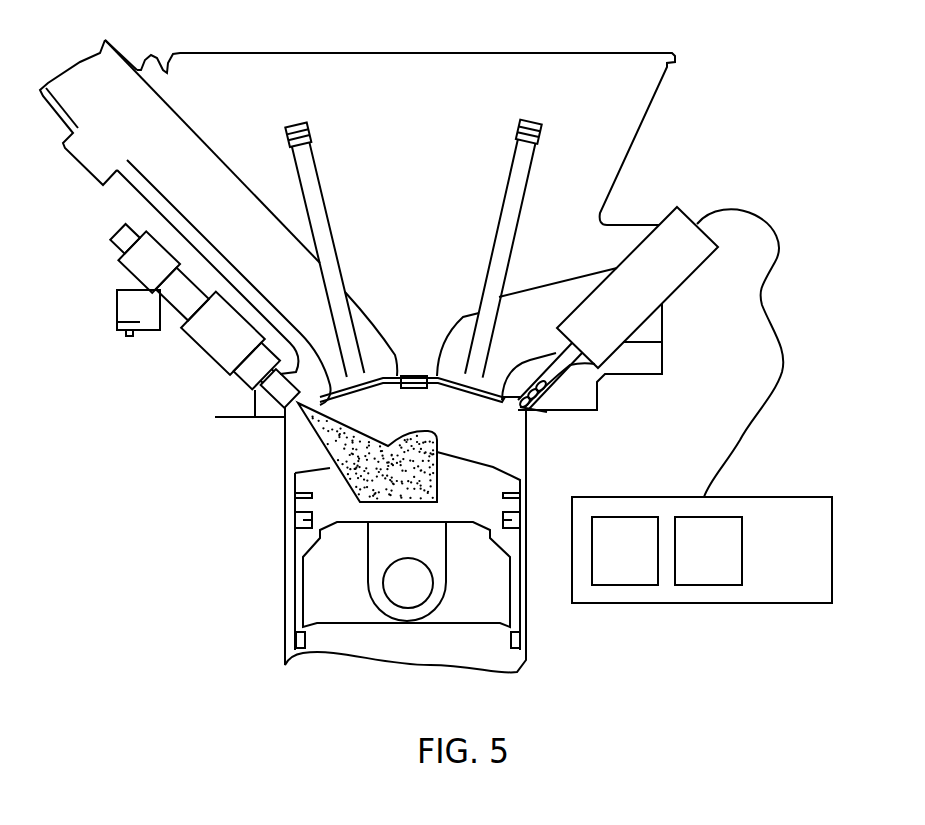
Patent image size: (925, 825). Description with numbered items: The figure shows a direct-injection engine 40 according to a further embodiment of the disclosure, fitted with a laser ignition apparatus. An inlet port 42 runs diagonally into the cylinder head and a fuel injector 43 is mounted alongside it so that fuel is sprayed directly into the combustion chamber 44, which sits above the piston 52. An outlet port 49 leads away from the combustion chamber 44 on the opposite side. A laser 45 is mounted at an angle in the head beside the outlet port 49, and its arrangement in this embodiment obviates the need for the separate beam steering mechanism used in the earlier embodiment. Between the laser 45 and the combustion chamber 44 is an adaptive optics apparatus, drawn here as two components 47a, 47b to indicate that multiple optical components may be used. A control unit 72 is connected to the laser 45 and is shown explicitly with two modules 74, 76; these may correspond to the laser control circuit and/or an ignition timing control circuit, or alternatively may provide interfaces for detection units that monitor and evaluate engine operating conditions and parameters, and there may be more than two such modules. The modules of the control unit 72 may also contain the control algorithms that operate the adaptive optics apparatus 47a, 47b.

The engine 40 is at (686, 68).
The inlet port 42 is at (214, 170).
The fuel injector 43 is at (200, 333).
The combustion chamber 44 is at (417, 397).
The laser 45 is at (675, 228).
The adaptive optics apparatus 47a is at (530, 410).
The adaptive optics apparatus 47b is at (547, 412).
The outlet port 49 is at (552, 303).
The piston 52 is at (485, 575).
The control unit 72 is at (792, 508).
The module 74 is at (625, 565).
The module 76 is at (713, 565).